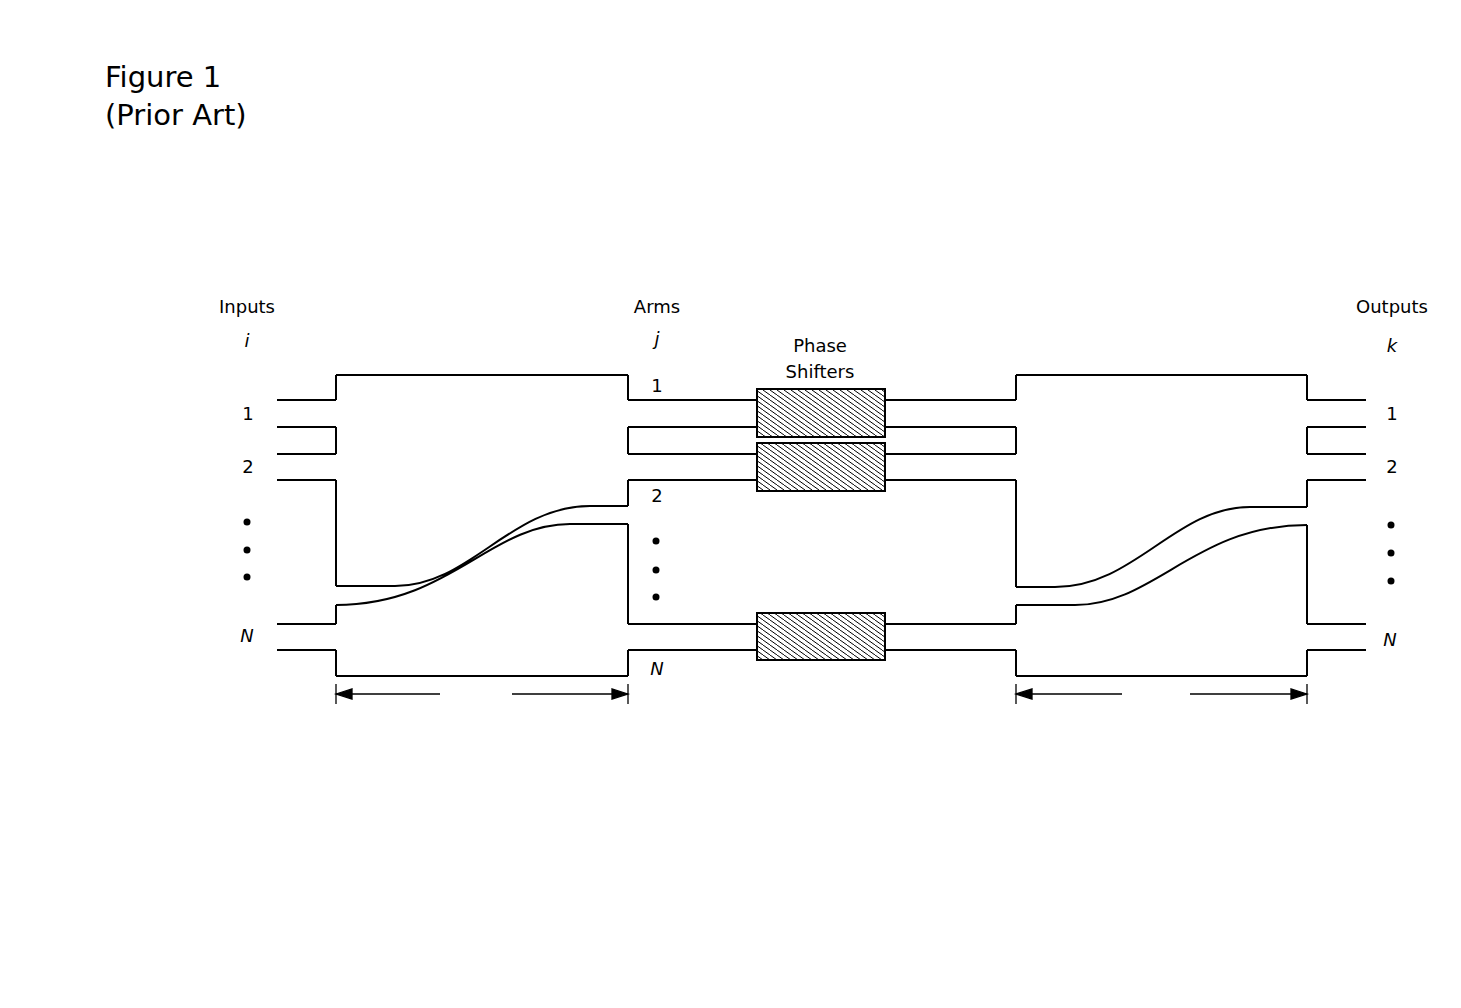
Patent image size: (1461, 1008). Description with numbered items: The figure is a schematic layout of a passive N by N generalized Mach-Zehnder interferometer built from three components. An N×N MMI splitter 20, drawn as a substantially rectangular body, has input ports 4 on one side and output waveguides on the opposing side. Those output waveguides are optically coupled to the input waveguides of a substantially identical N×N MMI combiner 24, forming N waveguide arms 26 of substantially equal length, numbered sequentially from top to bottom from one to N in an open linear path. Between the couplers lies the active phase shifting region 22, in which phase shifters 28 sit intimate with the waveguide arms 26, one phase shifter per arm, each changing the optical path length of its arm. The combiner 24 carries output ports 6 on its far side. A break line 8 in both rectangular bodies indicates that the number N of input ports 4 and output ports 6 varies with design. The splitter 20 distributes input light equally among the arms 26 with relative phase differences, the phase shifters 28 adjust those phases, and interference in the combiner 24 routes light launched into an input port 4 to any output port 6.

The input ports 4 is at (303, 399).
The output ports 6 is at (1338, 482).
The break line 8 is at (403, 585).
The N×N MMI splitter 20 is at (467, 350).
The active phase shifting region 22 is at (633, 728).
The N×N MMI combiner 24 is at (1166, 348).
The waveguide arms 26 is at (966, 400).
The phase shifters 28 is at (876, 389).